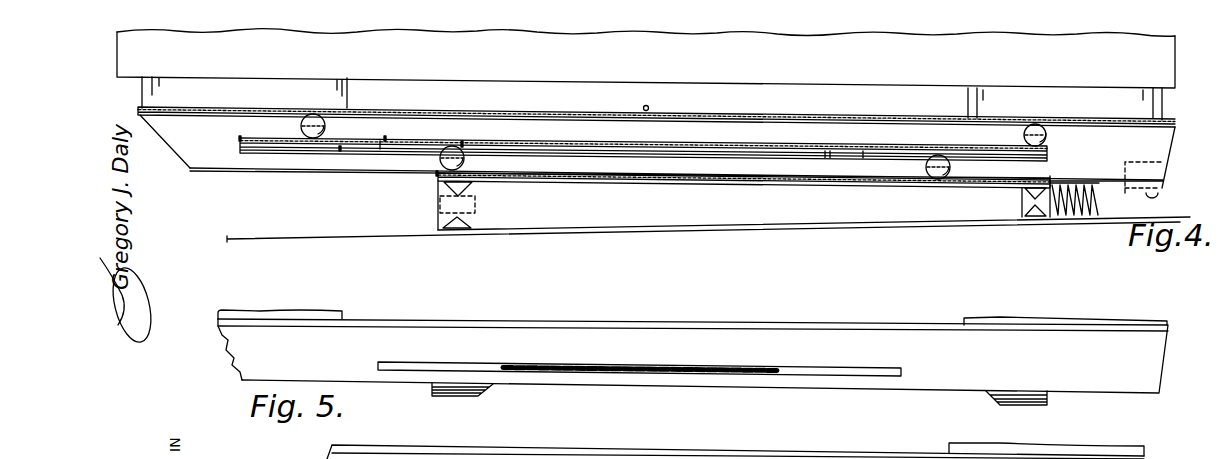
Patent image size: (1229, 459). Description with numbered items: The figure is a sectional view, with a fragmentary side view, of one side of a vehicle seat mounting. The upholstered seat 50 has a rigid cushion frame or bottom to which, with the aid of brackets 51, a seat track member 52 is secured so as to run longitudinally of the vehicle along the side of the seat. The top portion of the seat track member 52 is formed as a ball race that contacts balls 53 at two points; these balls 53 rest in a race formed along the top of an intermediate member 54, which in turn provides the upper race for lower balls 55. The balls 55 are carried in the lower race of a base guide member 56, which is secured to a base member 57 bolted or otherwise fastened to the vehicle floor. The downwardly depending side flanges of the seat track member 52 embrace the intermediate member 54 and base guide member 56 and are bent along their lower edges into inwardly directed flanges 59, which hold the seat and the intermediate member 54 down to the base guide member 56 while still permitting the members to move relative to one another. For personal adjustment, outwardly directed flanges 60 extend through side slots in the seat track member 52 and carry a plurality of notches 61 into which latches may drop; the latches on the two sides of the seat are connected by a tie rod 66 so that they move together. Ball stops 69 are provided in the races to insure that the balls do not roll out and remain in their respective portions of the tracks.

In FIG. 4, the upholstered seat 50 is at (771, 36).
In FIG. 4, the brackets 51 is at (305, 81).
In FIG. 5, the brackets 51 is at (306, 310).
In FIG. 4, the seat track member 52 is at (165, 126).
In FIG. 5, the seat track member 52 is at (1156, 355).
In FIG. 4, the balls 53 is at (318, 117).
In FIG. 4, the intermediate member 54 is at (588, 143).
In FIG. 4, the balls 55 is at (438, 163).
In FIG. 4, the base guide member 56 is at (617, 173).
In FIG. 4, the base member 57 is at (581, 222).
In FIG. 5, the base member 57 is at (437, 394).
In FIG. 4, the inwardly directed flanges 59 is at (188, 172).
In FIG. 5, the outwardly directed flanges 60 is at (586, 372).
In FIG. 5, the notches 61 is at (644, 372).
In FIG. 4, the tie rod 66 is at (648, 107).
In FIG. 4, the ball stops 69 is at (385, 137).